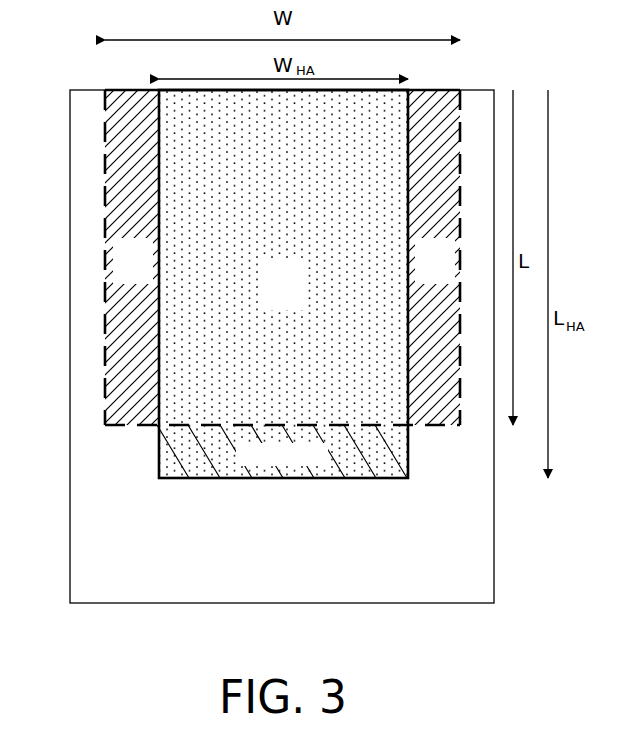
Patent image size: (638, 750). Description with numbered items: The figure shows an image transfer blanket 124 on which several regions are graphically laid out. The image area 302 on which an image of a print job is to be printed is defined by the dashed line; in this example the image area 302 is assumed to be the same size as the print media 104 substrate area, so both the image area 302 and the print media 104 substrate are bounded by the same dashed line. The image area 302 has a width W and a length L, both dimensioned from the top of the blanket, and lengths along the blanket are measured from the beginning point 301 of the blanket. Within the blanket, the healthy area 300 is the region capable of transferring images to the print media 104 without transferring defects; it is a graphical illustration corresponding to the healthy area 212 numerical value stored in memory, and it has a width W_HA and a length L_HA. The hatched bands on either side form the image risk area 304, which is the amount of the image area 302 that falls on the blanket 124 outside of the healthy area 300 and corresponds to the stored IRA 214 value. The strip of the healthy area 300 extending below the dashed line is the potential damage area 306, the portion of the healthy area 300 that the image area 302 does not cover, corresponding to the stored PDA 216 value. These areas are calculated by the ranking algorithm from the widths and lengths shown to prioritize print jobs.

The image transfer blanket 124 is at (70, 290).
The beginning point 301 is at (90, 90).
The image area 302 is at (236, 257).
The print media 104 is at (105, 201).
The image risk area 304 is at (282, 257).
The IRA 214 is at (149, 257).
The healthy area 300 is at (283, 284).
The healthy area 212 is at (301, 281).
The potential damage area 306 is at (282, 451).
The PDA 216 is at (327, 463).